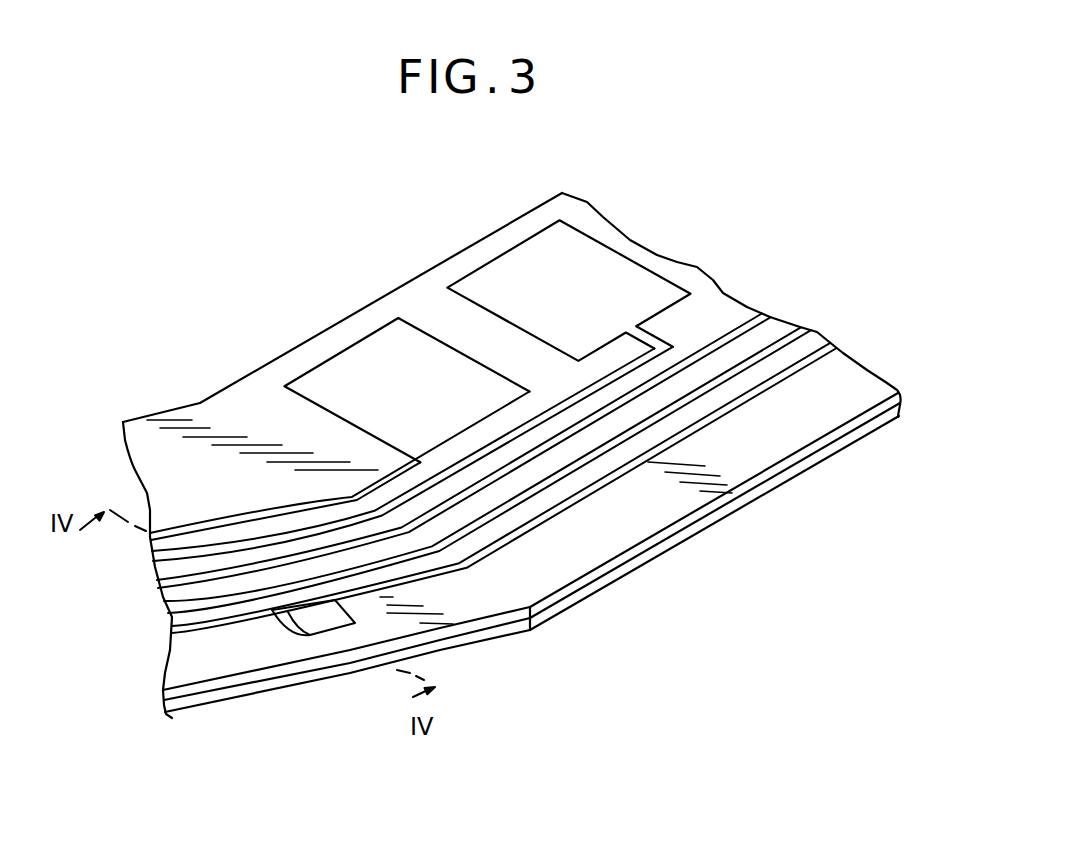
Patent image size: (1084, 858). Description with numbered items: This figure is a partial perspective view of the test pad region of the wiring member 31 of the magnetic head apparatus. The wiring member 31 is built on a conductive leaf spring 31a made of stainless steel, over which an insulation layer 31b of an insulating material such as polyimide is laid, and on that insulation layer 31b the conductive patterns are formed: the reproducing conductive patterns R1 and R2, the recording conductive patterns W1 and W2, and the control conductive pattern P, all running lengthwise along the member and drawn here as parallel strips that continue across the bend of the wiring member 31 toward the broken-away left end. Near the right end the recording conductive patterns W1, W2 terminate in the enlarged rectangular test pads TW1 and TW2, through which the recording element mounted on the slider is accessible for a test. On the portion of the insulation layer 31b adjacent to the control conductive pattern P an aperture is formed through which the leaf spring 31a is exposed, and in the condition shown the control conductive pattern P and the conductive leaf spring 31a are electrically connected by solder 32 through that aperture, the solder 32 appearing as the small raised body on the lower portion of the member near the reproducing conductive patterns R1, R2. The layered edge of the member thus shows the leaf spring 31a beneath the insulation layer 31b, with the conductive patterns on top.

The wiring member 31 is at (718, 527).
The conductive leaf spring 31a is at (647, 560).
The insulation layer 31b is at (560, 595).
The solder 32 is at (290, 630).
The control conductive pattern P is at (448, 573).
The test pad TW1 is at (538, 282).
The test pad TW2 is at (373, 378).
The recording conductive pattern W1 is at (264, 545).
The recording conductive pattern W2 is at (172, 533).
The reproducing conductive pattern R1 is at (232, 595).
The reproducing conductive pattern R2 is at (185, 580).